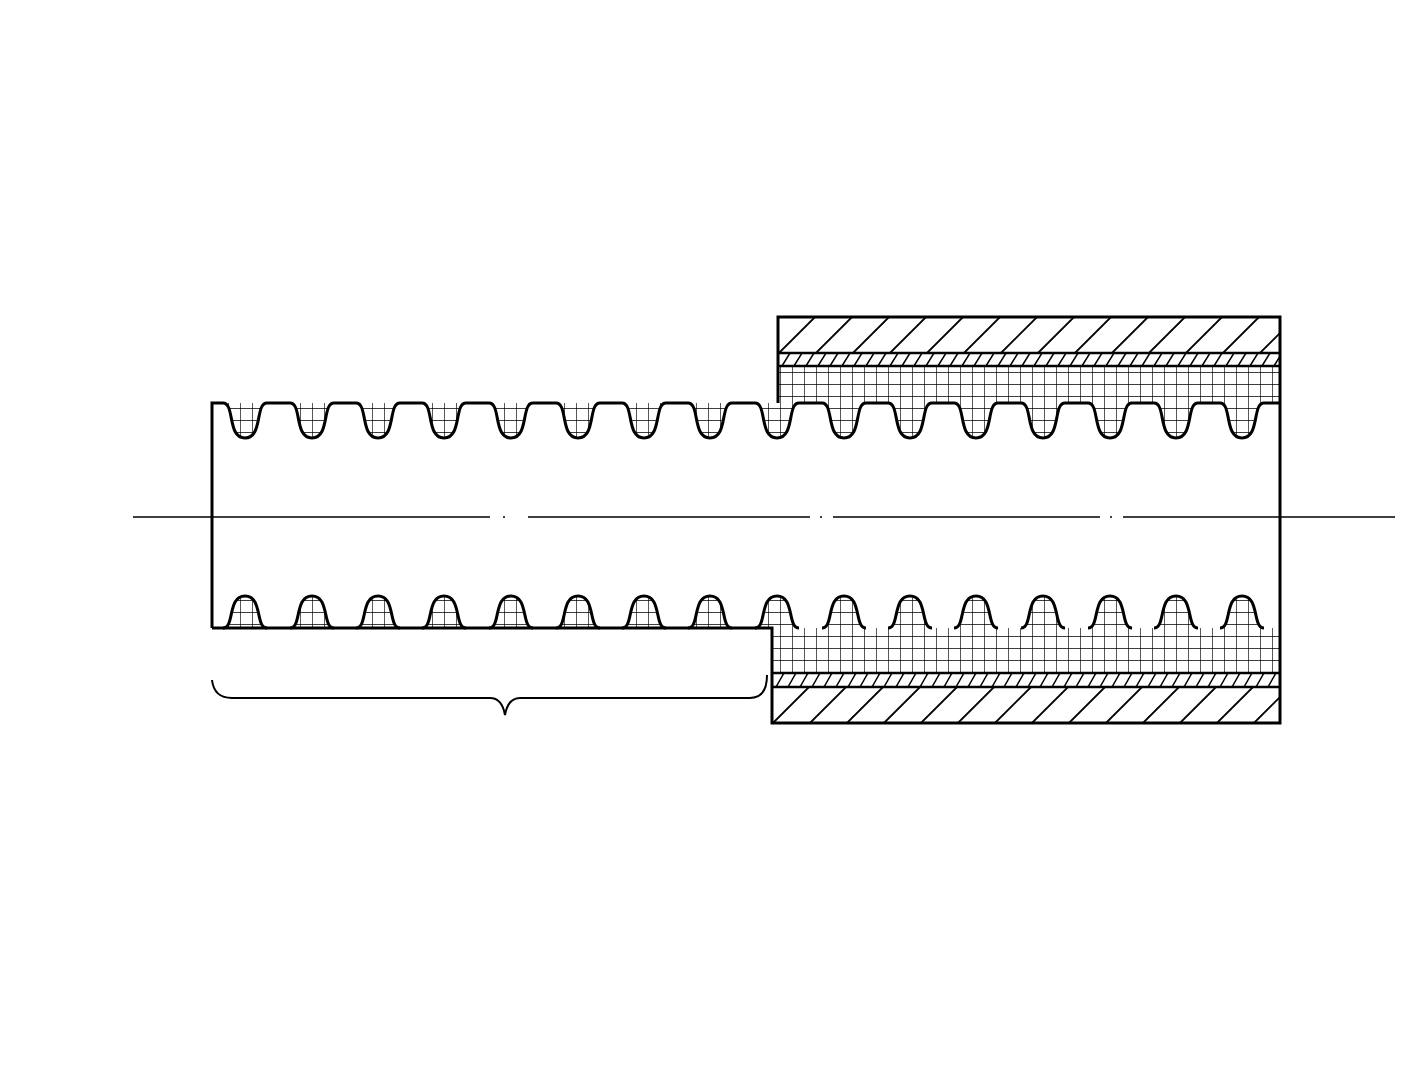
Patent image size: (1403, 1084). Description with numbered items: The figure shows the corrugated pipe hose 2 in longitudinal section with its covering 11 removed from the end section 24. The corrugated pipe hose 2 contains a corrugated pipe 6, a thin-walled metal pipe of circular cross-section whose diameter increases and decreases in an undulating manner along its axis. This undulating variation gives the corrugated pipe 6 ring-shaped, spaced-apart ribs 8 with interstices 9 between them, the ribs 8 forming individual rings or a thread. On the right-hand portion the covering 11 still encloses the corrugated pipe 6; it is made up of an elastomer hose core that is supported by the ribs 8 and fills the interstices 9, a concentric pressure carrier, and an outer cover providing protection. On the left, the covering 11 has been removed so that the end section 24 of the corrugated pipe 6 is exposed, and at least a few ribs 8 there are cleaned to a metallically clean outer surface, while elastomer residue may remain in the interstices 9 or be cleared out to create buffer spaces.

The corrugated pipe hose 2 is at (843, 258).
The corrugated pipe 6 is at (243, 598).
The ribs 8 is at (276, 402).
The interstices 9 is at (320, 402).
The covering 11 is at (998, 330).
The end section 24 is at (489, 716).